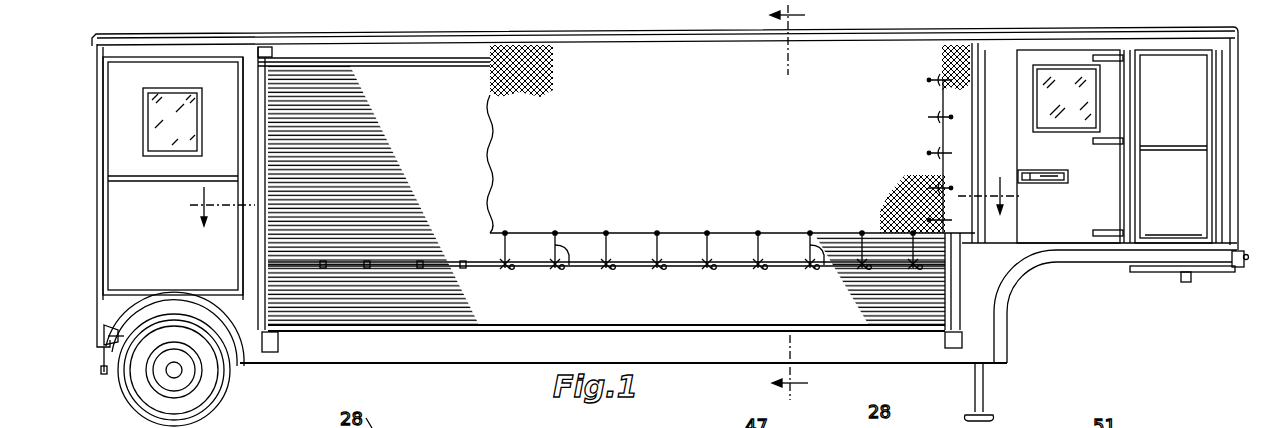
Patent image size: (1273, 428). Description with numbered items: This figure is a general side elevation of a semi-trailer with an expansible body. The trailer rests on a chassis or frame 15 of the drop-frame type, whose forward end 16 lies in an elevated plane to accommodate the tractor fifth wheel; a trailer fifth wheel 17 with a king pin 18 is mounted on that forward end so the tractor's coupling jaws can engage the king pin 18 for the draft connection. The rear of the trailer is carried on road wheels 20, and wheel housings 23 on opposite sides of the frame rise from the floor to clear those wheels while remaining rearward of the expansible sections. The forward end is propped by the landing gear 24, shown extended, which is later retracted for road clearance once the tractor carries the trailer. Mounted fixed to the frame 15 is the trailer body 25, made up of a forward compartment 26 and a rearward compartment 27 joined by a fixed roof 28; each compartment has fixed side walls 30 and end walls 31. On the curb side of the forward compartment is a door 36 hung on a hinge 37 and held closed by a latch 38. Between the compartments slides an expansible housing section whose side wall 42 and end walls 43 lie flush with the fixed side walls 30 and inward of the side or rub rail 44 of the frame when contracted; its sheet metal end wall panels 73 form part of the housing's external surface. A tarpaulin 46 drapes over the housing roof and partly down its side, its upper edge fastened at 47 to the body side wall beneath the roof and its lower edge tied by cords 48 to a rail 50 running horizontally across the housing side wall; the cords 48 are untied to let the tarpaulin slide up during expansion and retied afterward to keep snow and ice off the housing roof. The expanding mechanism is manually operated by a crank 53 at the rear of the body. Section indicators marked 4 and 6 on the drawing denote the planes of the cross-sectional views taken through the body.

The chassis or frame 15 is at (1002, 344).
The forward end of the frame 16 is at (1105, 255).
The trailer fifth wheel 17 is at (1218, 272).
The king pin 18 is at (1186, 282).
The road wheels 20 is at (213, 381).
The wheel housing 23 is at (108, 330).
The landing gear 24 is at (984, 390).
The trailer body 25 is at (1182, 193).
The forward compartment 26 is at (1220, 134).
The rearward compartment 27 is at (123, 241).
The fixed roof 28 is at (465, 29).
The fixed side wall 30 is at (118, 129).
The end wall 31 is at (97, 182).
The door 36 is at (1056, 54).
The hinge 37 is at (1126, 150).
The latch 38 is at (1050, 183).
The side wall 42 is at (470, 183).
The end wall 43 is at (257, 160).
The side or rub rail 44 is at (455, 345).
The tarpaulin 46 is at (722, 60).
The fastening of tarpaulin upper edge 47 is at (625, 44).
The cords 48 is at (574, 266).
The rail 50 is at (696, 266).
The crank 53 is at (100, 361).
The end wall panel 73 is at (258, 249).
The section line 4- 4 is at (798, 202).
The section line 6- 6 is at (598, 189).